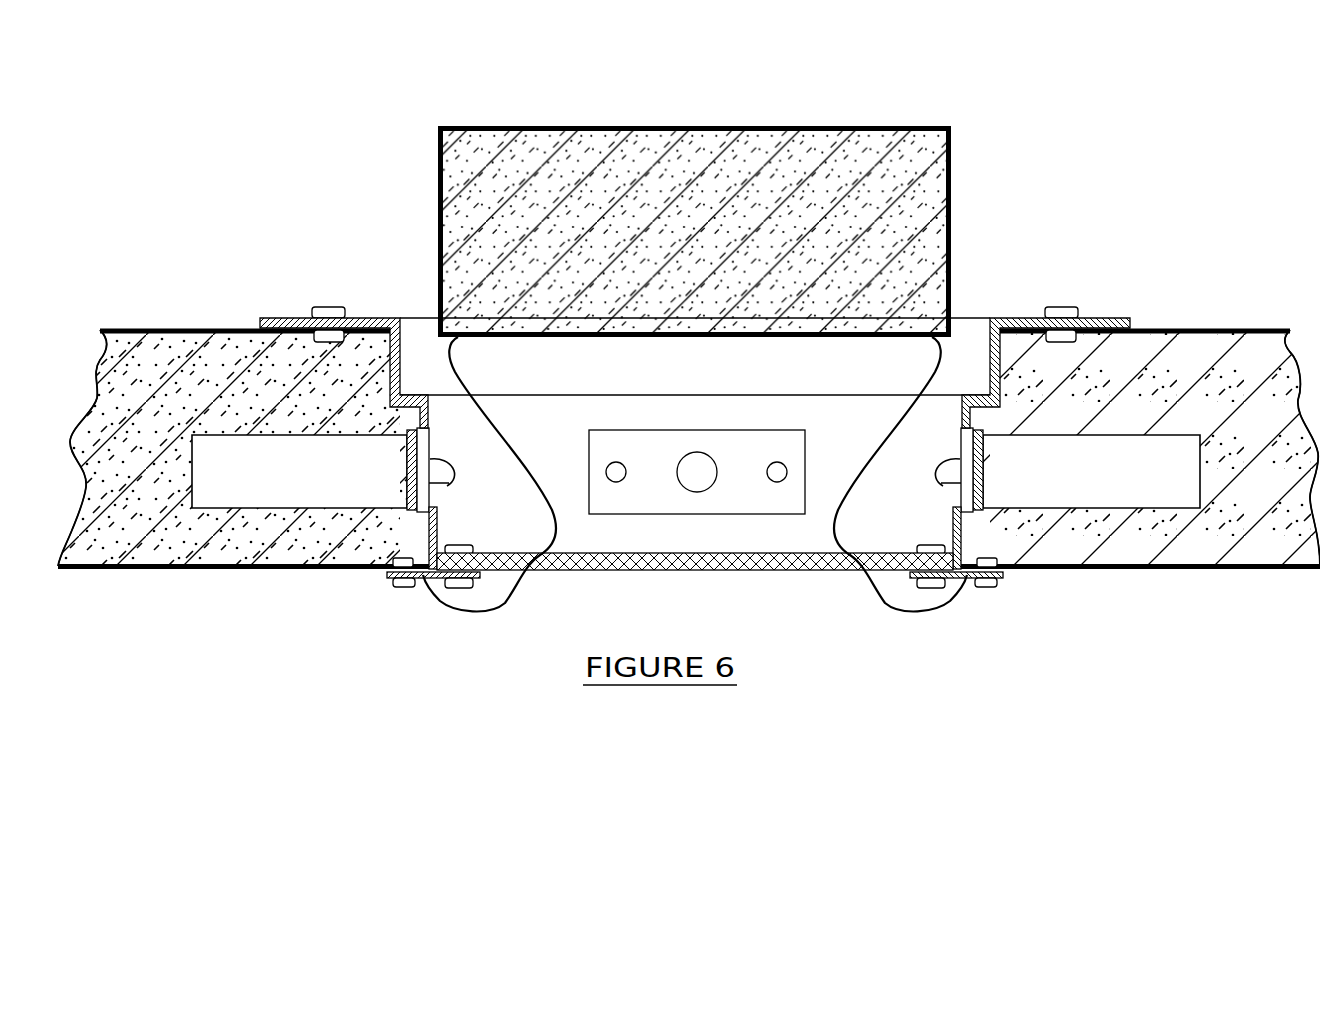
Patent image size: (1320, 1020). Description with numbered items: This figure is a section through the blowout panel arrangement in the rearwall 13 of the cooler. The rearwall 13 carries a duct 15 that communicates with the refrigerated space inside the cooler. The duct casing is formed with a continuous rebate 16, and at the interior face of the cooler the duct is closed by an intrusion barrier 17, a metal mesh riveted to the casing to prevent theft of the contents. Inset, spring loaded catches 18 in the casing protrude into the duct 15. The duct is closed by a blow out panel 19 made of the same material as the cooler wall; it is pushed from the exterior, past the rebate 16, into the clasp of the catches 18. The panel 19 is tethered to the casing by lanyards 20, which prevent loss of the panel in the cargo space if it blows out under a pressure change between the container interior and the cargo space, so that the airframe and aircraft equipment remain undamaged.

The rearwall 13 is at (1227, 360).
The duct 15 is at (977, 283).
The rebate 16 is at (415, 358).
The intrusion barrier 17 is at (588, 567).
The spring loaded catch 18 is at (695, 465).
The blow out panel 19 is at (681, 168).
The lanyard 20 is at (437, 605).